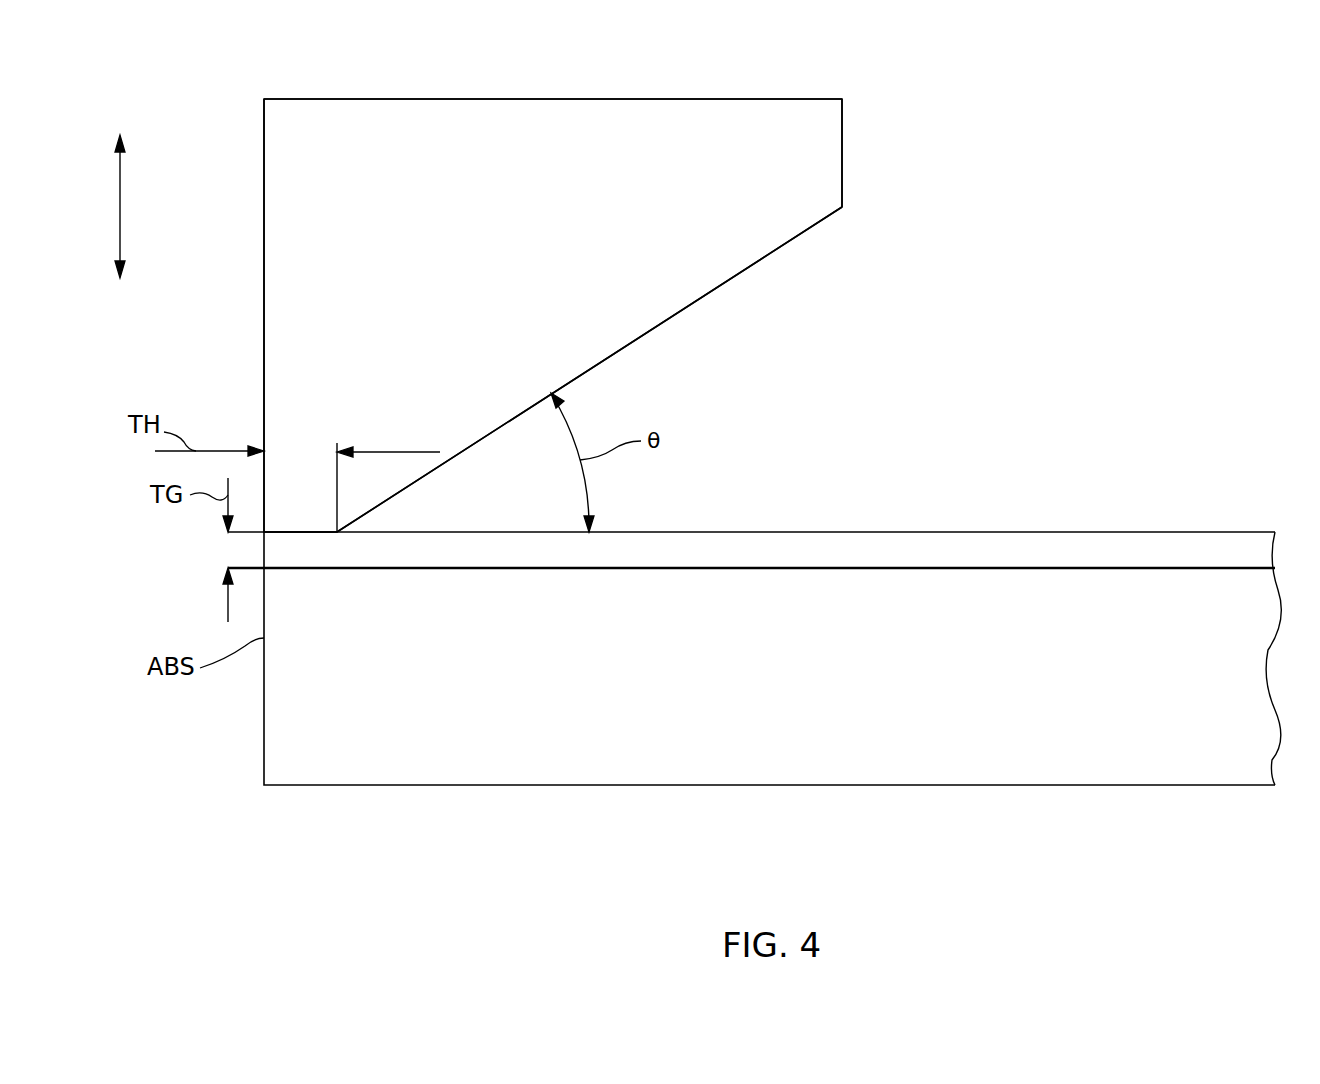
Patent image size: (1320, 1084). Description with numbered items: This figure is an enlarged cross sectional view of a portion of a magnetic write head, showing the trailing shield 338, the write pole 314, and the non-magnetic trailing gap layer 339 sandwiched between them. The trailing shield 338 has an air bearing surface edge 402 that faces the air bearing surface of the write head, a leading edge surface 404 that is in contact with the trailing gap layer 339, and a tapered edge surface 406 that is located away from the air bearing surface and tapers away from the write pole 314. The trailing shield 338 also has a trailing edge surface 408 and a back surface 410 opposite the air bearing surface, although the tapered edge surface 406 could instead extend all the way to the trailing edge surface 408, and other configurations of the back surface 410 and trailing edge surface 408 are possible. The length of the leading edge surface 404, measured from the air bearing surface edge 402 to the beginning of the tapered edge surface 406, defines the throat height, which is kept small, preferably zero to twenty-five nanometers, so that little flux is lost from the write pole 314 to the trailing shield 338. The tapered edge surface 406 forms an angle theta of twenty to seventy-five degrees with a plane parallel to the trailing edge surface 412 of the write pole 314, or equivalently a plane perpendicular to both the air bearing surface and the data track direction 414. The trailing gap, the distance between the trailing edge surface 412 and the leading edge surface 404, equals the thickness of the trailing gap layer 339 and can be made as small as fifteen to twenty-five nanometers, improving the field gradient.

The write pole 314 is at (786, 680).
The trailing shield 338 is at (526, 208).
The trailing gap layer 339 is at (878, 551).
The ABS edge surface 402 is at (264, 270).
The leading edge surface 404 is at (300, 532).
The tapered edge surface 406 is at (718, 287).
The trailing edge surface 408 is at (447, 99).
The back surface 410 is at (842, 137).
The trailing edge surface of write pole 412 is at (1005, 568).
The data track direction 414 is at (122, 183).